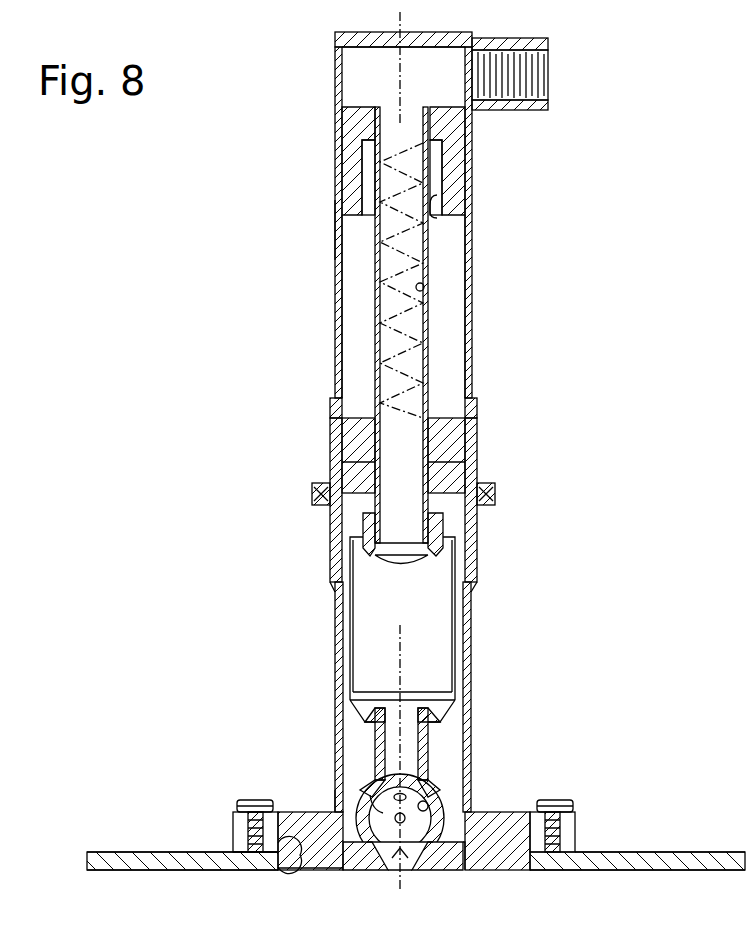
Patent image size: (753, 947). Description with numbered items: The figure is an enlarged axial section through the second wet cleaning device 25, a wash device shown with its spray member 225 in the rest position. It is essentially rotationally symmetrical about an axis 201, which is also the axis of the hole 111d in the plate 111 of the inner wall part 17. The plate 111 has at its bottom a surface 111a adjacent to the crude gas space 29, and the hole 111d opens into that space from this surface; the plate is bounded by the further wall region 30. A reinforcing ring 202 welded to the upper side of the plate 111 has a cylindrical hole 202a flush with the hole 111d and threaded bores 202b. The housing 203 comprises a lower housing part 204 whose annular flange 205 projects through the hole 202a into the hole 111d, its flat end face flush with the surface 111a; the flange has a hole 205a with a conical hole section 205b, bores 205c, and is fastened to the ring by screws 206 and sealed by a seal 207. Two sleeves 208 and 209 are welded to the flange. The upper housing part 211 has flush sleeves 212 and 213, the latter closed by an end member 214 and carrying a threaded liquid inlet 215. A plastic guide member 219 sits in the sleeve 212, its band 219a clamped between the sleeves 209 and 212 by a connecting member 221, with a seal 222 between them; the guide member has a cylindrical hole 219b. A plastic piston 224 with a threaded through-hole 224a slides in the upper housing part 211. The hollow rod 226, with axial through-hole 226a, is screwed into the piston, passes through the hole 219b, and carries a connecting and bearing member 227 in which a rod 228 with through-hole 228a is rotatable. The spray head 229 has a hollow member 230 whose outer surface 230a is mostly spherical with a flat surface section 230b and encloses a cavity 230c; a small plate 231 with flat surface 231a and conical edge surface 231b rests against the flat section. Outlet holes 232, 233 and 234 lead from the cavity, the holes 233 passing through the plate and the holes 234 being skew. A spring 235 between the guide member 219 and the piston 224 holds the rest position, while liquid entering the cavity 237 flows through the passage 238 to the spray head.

The inner wall part 17 is at (87, 860).
The second wet cleaning device 25 is at (336, 220).
The crude gas space 29 is at (660, 870).
The base plate portion 30 is at (610, 830).
The plate 111 is at (130, 852).
The surface 111a is at (130, 870).
The hole 111d is at (270, 870).
The axis 201 is at (393, 70).
The reinforcing ring 202 is at (290, 822).
The cylindrical hole 202a is at (290, 868).
The threaded bores 202b is at (233, 852).
The housing 203 is at (331, 527).
The lower housing part 204 is at (340, 645).
The annular flange 205 is at (332, 812).
The hole 205a is at (345, 790).
The conical hole section 205b is at (352, 870).
The bores 205c is at (238, 805).
The screws 206 is at (258, 800).
The seal 207 is at (560, 800).
The lower sleeve 208 is at (336, 612).
The upper sleeve 209 is at (345, 555).
The upper housing part 211 is at (337, 237).
The lower sleeve 212 is at (333, 410).
The upper sleeve 213 is at (338, 278).
The end member 214 is at (335, 42).
The liquid inlet 215 is at (505, 110).
The guide member 219 is at (340, 446).
The band 219a is at (470, 445).
The cylindrical hole 219b is at (340, 462).
The connecting member 221 is at (497, 494).
The seal 222 is at (485, 490).
The piston 224 is at (340, 143).
The through-hole 224a is at (445, 215).
The spray member 225 is at (374, 740).
The hollow rod 226 is at (437, 225).
The axial through-hole 226a is at (430, 262).
The connecting and bearing member 227 is at (445, 570).
The rod 228 is at (460, 700).
The axial through-hole 228a is at (465, 722).
The spray head 229 is at (450, 798).
The hollow member 230 is at (490, 812).
The outer surface 230a is at (440, 800).
The flat surface section 230b is at (430, 870).
The cavity 230c is at (380, 748).
The small plate 231 is at (445, 870).
The flat surface 231a is at (450, 870).
The conical edge surface 231b is at (312, 868).
The liquid outlet holes 232 is at (445, 800).
The liquid outlet holes 233 is at (402, 880).
The liquid outlet holes 234 is at (430, 780).
The spring 235 is at (440, 345).
The cavity 237 is at (340, 80).
The passage 238 is at (430, 320).